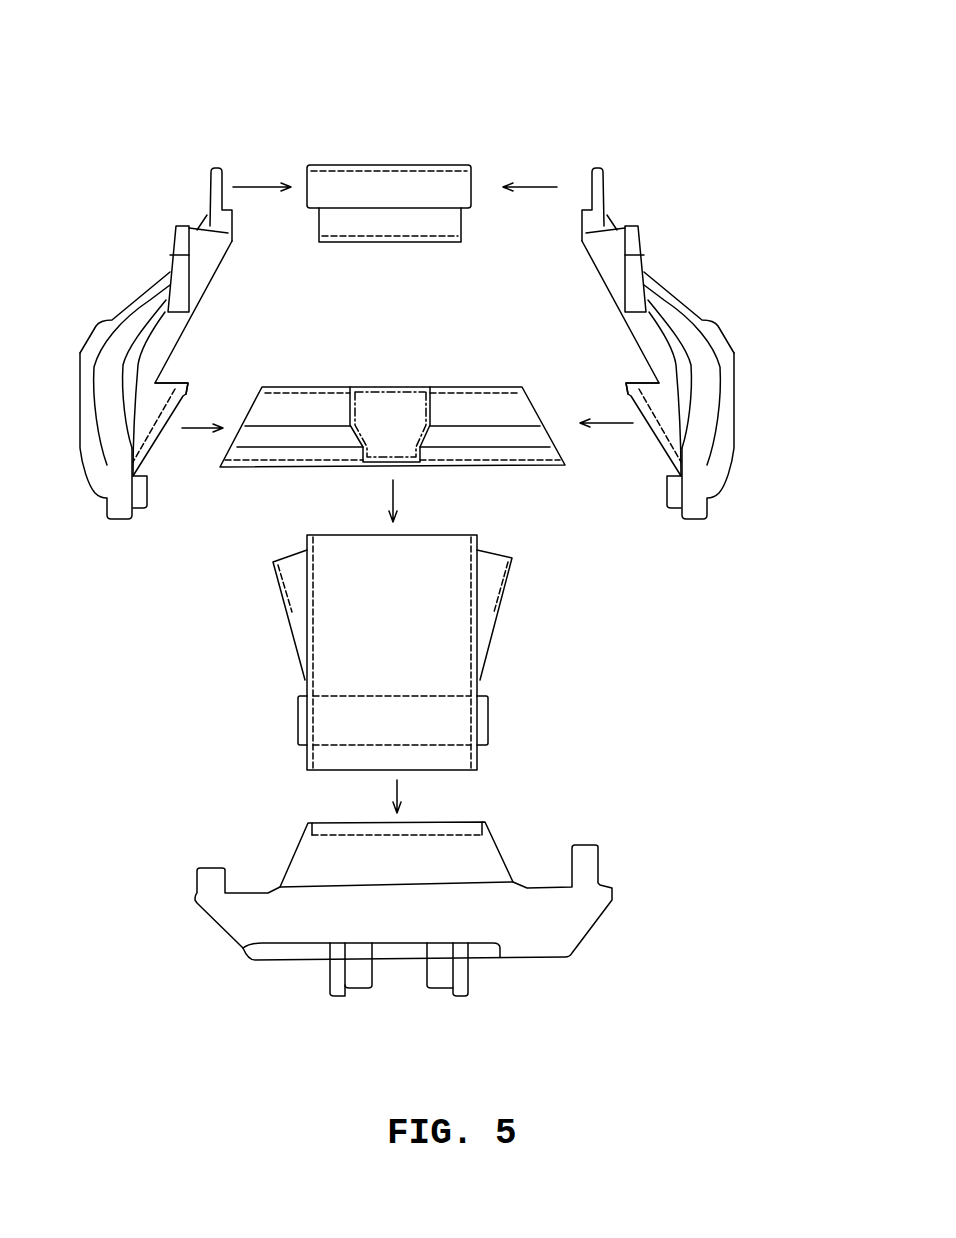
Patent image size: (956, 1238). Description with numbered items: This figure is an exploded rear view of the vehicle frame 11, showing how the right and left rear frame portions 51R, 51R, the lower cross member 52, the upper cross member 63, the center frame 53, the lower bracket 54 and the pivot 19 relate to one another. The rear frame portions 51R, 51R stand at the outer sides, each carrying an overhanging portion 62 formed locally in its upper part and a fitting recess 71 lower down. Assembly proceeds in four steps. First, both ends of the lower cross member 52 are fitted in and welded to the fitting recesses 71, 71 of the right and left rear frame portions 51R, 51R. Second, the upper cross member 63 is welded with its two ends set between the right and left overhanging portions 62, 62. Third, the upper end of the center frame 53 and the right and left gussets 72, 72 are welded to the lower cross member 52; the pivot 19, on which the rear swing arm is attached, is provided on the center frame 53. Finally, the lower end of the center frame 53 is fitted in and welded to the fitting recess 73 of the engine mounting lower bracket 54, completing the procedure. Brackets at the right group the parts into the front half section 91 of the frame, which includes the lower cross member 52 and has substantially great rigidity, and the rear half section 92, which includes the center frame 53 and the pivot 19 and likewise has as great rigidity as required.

The frame 11 is at (243, 107).
The pivot 19 is at (298, 731).
The rear frame portion 51R is at (122, 312).
The lower cross member 52 is at (322, 387).
The center frame 53 is at (340, 636).
The engine mounting lower bracket 54 is at (236, 947).
The overhanging portion 62 is at (210, 180).
The upper cross member 63 is at (374, 181).
The fitting recess 71 is at (155, 407).
The gusset 72 is at (295, 578).
The fitting recess 73 is at (462, 822).
The front half section 91 is at (771, 35).
The rear half section 92 is at (775, 1010).